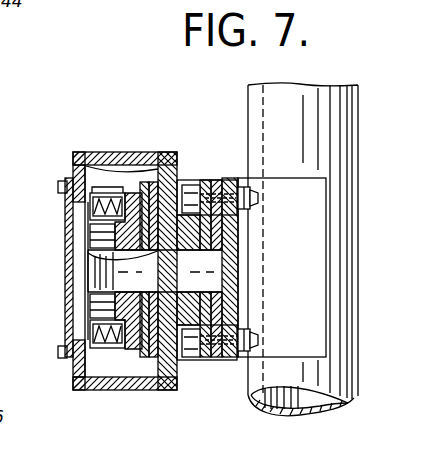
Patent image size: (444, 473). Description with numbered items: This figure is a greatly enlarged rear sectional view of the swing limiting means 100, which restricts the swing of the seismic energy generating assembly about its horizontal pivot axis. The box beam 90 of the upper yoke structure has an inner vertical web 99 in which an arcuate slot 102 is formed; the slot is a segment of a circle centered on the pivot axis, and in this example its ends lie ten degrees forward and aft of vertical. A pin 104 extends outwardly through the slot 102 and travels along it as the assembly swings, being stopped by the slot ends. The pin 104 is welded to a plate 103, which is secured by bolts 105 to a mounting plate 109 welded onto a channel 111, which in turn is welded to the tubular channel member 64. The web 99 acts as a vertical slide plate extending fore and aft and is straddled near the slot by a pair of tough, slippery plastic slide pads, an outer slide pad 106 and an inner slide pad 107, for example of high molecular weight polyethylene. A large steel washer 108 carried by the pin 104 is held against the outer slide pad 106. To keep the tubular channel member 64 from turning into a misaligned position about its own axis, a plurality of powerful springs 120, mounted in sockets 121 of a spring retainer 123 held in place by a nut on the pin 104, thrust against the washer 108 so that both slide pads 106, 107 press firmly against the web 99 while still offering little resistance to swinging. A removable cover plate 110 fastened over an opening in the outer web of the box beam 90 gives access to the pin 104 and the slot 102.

The tubular channel member 64 is at (345, 153).
The box beam 90 is at (97, 160).
The inner vertical web 99 is at (153, 160).
The swing limiting means 100 is at (113, 352).
The arcuate slot 102 is at (88, 252).
The plate 103 is at (212, 360).
The pin 104 is at (184, 281).
The bolts 105 is at (258, 198).
The outer slide pad 106 is at (145, 353).
The inner slide pad 107 is at (177, 160).
The large steel washer 108 is at (87, 317).
The mounting plate 109 is at (230, 263).
The removable cover plate 110 is at (67, 297).
The channel 111 is at (318, 283).
The springs 120 is at (73, 167).
The sockets 121 is at (97, 212).
The spring retainer 123 is at (118, 193).